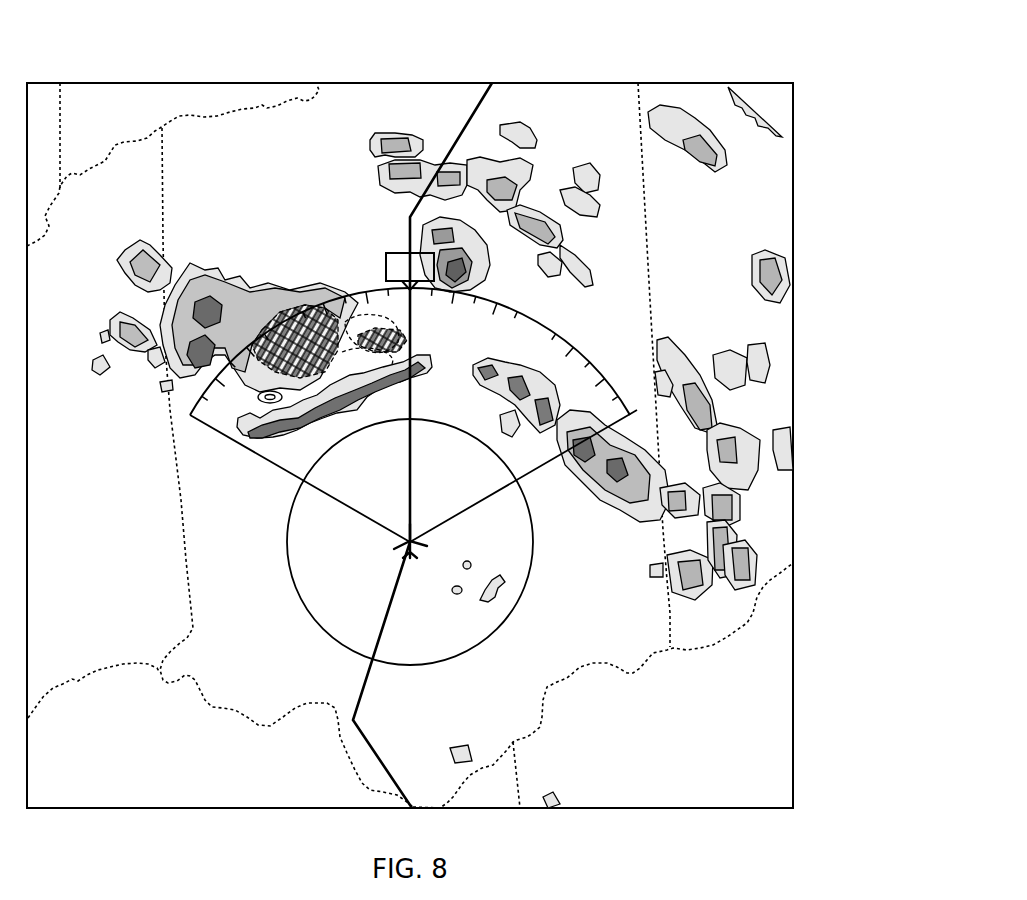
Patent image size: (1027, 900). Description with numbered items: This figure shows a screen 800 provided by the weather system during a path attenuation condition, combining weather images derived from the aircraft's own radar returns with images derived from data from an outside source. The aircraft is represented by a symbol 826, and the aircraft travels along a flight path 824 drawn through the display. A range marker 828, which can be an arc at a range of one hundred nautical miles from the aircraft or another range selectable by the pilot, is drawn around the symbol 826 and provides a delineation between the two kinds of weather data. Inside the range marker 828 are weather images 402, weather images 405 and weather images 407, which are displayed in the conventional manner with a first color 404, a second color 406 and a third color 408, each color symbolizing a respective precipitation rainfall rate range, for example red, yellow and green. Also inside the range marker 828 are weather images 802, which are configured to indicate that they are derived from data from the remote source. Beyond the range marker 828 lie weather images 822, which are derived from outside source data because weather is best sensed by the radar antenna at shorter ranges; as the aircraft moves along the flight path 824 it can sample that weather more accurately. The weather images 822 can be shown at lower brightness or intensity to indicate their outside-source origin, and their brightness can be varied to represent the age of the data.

The screen 800 is at (626, 47).
The weather images 822 is at (336, 150).
The flight path 824 is at (380, 757).
The symbol 826 is at (430, 544).
The range marker 828 is at (584, 358).
The weather images 802 is at (216, 421).
The weather images 402 is at (332, 441).
The first color 404 is at (342, 317).
The weather images 405 is at (517, 363).
The second color 406 is at (393, 333).
The weather images 407 is at (460, 288).
The third color 408 is at (262, 382).